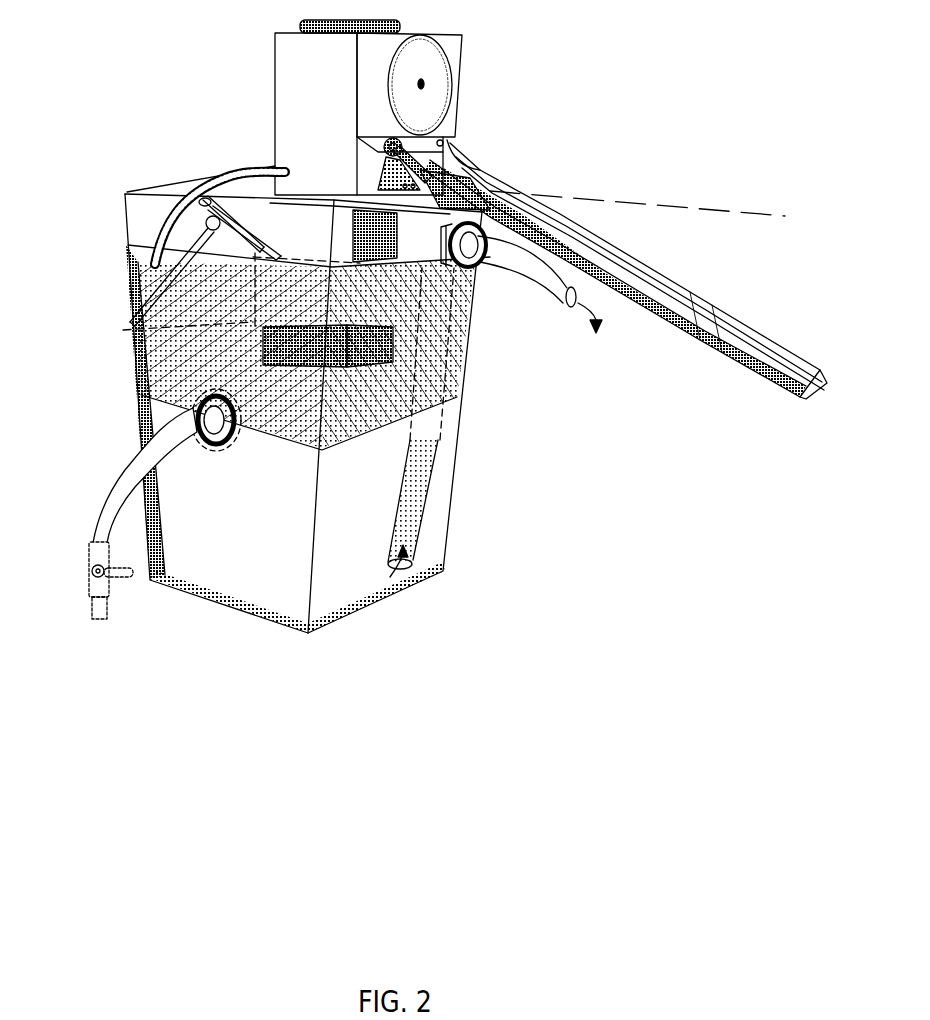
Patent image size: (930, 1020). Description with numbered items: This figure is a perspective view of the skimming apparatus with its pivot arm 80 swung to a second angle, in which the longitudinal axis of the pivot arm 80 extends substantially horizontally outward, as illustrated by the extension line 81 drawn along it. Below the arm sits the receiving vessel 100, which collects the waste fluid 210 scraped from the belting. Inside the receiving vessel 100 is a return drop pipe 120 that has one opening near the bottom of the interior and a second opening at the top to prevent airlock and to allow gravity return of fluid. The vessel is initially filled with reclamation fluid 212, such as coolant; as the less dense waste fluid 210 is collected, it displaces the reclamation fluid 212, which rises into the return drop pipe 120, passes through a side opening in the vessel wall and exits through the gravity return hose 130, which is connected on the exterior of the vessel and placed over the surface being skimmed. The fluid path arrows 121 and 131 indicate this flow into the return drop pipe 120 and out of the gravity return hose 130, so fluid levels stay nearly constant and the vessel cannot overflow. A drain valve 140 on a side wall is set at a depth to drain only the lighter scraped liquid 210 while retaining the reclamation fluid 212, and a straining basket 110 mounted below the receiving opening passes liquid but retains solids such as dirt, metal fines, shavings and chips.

The receiving vessel 100 is at (125, 223).
The waste fluid 210 is at (160, 368).
The reclamation fluid 212 is at (160, 415).
The drain valve 140 is at (95, 552).
The straining basket 110 is at (348, 370).
The return drop pipe 120 is at (420, 500).
The fluid path arrow 121 is at (380, 575).
The gravity return hose 130 is at (548, 292).
The fluid path arrow 131 is at (578, 303).
The pivot arm 80 is at (593, 260).
The extension line 81 is at (570, 198).